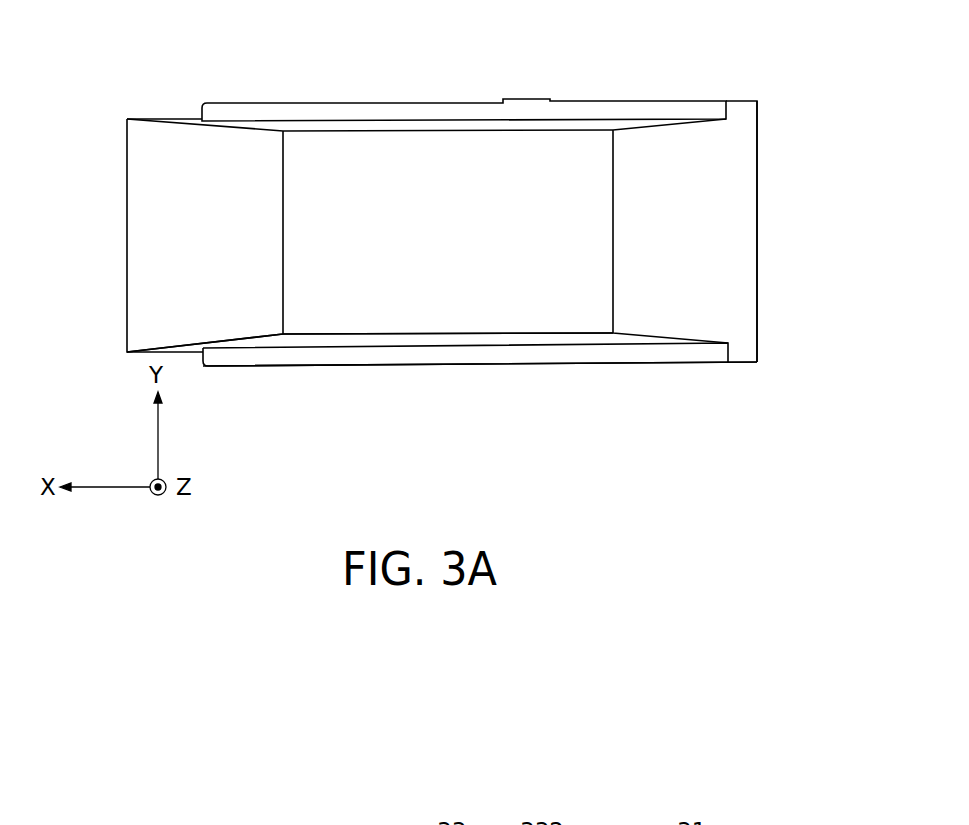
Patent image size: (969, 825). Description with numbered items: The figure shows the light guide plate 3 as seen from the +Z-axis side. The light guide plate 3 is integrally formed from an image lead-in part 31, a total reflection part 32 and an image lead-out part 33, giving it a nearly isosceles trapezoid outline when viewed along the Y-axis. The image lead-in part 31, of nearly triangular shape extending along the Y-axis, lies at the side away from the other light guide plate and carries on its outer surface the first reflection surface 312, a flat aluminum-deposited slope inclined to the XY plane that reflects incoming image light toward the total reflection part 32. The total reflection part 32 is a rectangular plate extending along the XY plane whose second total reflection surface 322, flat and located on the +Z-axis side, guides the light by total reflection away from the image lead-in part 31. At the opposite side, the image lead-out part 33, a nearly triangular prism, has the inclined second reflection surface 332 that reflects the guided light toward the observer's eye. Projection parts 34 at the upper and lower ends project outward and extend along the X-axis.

The light guide plate 3 is at (96, 121).
The image lead-in part 31 is at (688, 138).
The first reflection surface 312 is at (743, 190).
The total reflection part 32 is at (450, 146).
The second total reflection surface 322 is at (462, 318).
The image lead-out part 33 is at (179, 136).
The second reflection surface 332 is at (237, 325).
The projection parts 34 is at (361, 113).